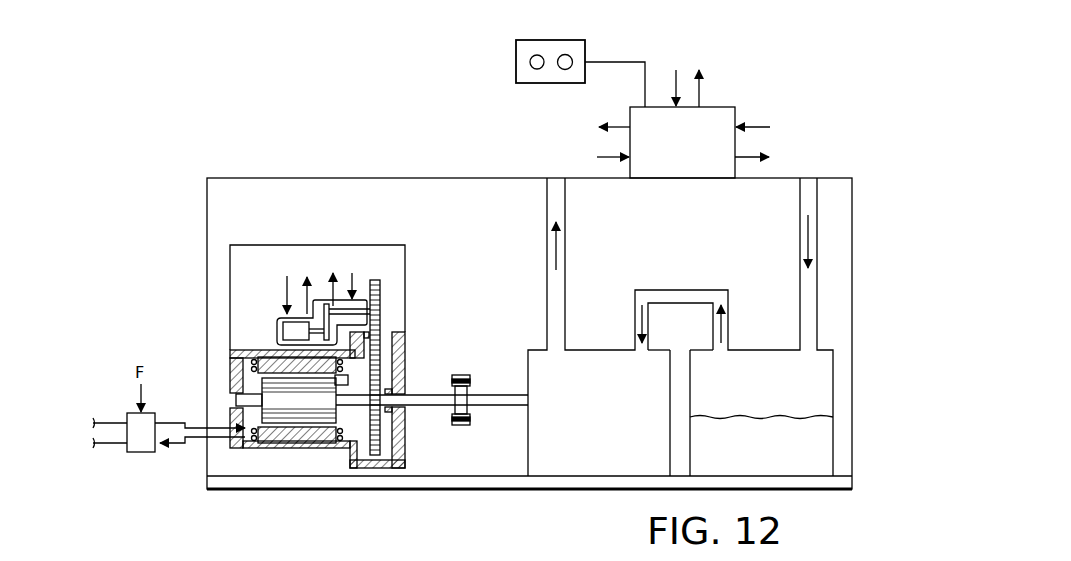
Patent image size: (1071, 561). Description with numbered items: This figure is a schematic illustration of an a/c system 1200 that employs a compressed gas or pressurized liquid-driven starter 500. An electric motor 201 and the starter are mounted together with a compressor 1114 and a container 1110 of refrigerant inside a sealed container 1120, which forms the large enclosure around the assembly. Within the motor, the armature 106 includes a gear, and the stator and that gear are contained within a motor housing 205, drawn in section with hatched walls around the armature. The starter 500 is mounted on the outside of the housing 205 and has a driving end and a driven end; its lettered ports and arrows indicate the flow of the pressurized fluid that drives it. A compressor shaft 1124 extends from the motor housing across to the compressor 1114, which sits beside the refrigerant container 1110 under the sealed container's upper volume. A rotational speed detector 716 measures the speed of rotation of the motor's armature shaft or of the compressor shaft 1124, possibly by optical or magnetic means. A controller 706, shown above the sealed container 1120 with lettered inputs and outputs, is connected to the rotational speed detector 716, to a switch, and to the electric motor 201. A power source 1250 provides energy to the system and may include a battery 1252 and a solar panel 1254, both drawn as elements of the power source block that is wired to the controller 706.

The a/c system 1200 is at (301, 114).
The sealed container 1120 is at (300, 176).
The starter 500 is at (263, 314).
The armature 106 is at (268, 392).
The electric motor 201 is at (287, 458).
The rotational speed detector 716 is at (349, 388).
The motor housing 205 is at (405, 442).
The compressor shaft 1124 is at (503, 398).
The compressor 1114 is at (590, 350).
The container of refrigerant 1110 is at (754, 350).
The controller 706 is at (713, 118).
The power source 1250 is at (533, 84).
The battery 1252 is at (530, 62).
The solar panel 1254 is at (568, 56).